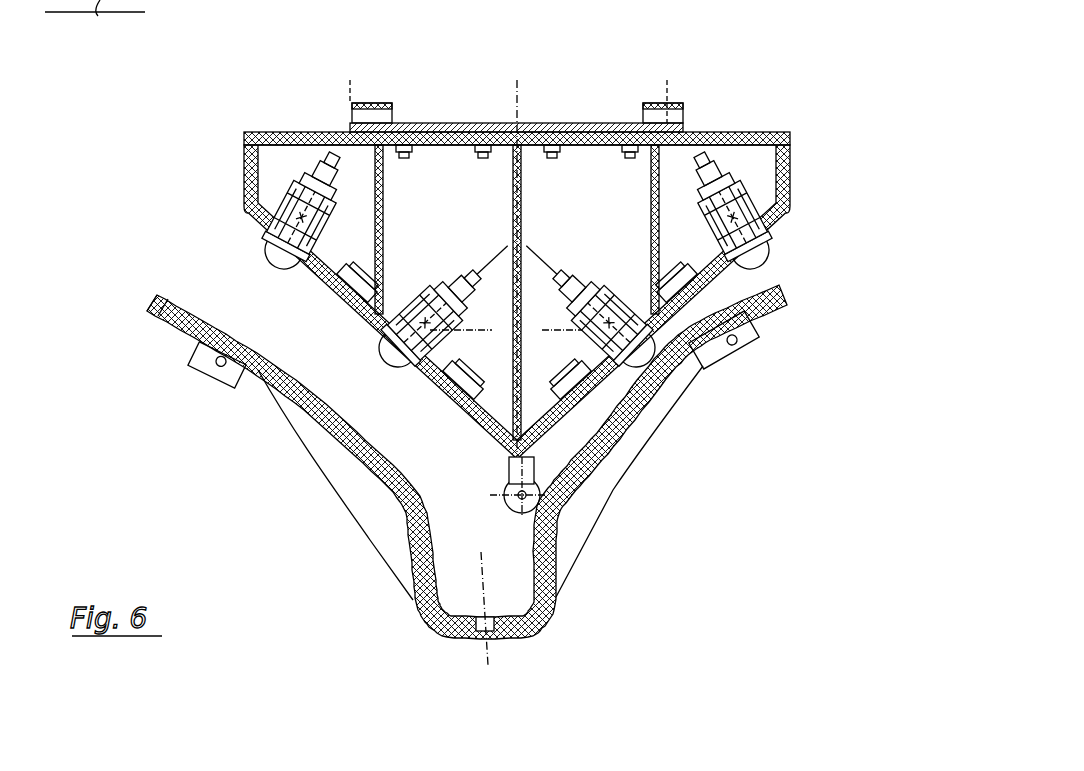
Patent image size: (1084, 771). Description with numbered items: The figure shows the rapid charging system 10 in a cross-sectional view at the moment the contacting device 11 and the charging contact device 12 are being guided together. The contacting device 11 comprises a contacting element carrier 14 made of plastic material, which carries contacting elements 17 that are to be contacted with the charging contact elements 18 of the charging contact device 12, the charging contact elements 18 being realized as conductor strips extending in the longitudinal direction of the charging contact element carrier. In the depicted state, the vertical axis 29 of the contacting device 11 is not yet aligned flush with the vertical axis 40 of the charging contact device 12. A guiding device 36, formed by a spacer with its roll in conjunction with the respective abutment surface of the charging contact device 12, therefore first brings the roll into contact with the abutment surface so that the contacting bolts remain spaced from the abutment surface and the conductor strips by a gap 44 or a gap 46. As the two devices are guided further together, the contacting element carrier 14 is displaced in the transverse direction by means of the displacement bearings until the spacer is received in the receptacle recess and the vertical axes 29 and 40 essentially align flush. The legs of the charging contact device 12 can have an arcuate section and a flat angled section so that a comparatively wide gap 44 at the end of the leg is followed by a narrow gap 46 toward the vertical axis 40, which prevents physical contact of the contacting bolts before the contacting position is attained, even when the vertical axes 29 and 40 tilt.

The rapid charging system 10 is at (829, 75).
The contacting device 11 is at (726, 112).
The charging contact device 12 is at (268, 430).
The contacting element carrier 14 is at (291, 131).
The contacting elements 17 is at (257, 247).
The charging contact elements 18 is at (358, 425).
The vertical axis 29 is at (522, 96).
The guiding device 36 is at (188, 245).
The vertical axis 40 is at (490, 663).
The gap 44 is at (796, 252).
The gap 46 is at (675, 331).